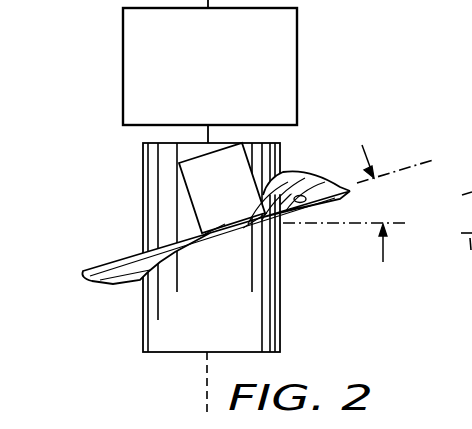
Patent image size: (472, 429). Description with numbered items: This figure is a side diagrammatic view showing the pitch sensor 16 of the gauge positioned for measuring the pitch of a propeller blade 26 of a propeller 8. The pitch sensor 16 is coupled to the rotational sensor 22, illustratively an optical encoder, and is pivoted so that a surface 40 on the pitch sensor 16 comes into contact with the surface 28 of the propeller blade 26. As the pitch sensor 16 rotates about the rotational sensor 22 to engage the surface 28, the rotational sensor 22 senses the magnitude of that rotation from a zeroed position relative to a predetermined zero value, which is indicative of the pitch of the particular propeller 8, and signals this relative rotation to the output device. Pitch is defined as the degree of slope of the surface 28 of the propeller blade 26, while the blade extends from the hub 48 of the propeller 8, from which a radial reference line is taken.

The rotational sensor 22 is at (192, 80).
The pitch sensor 16 is at (236, 198).
The hub 48 is at (226, 327).
The surface 40 is at (190, 233).
The propeller blade 26 is at (312, 183).
The surface 28 is at (302, 204).
The propeller 8 is at (129, 314).